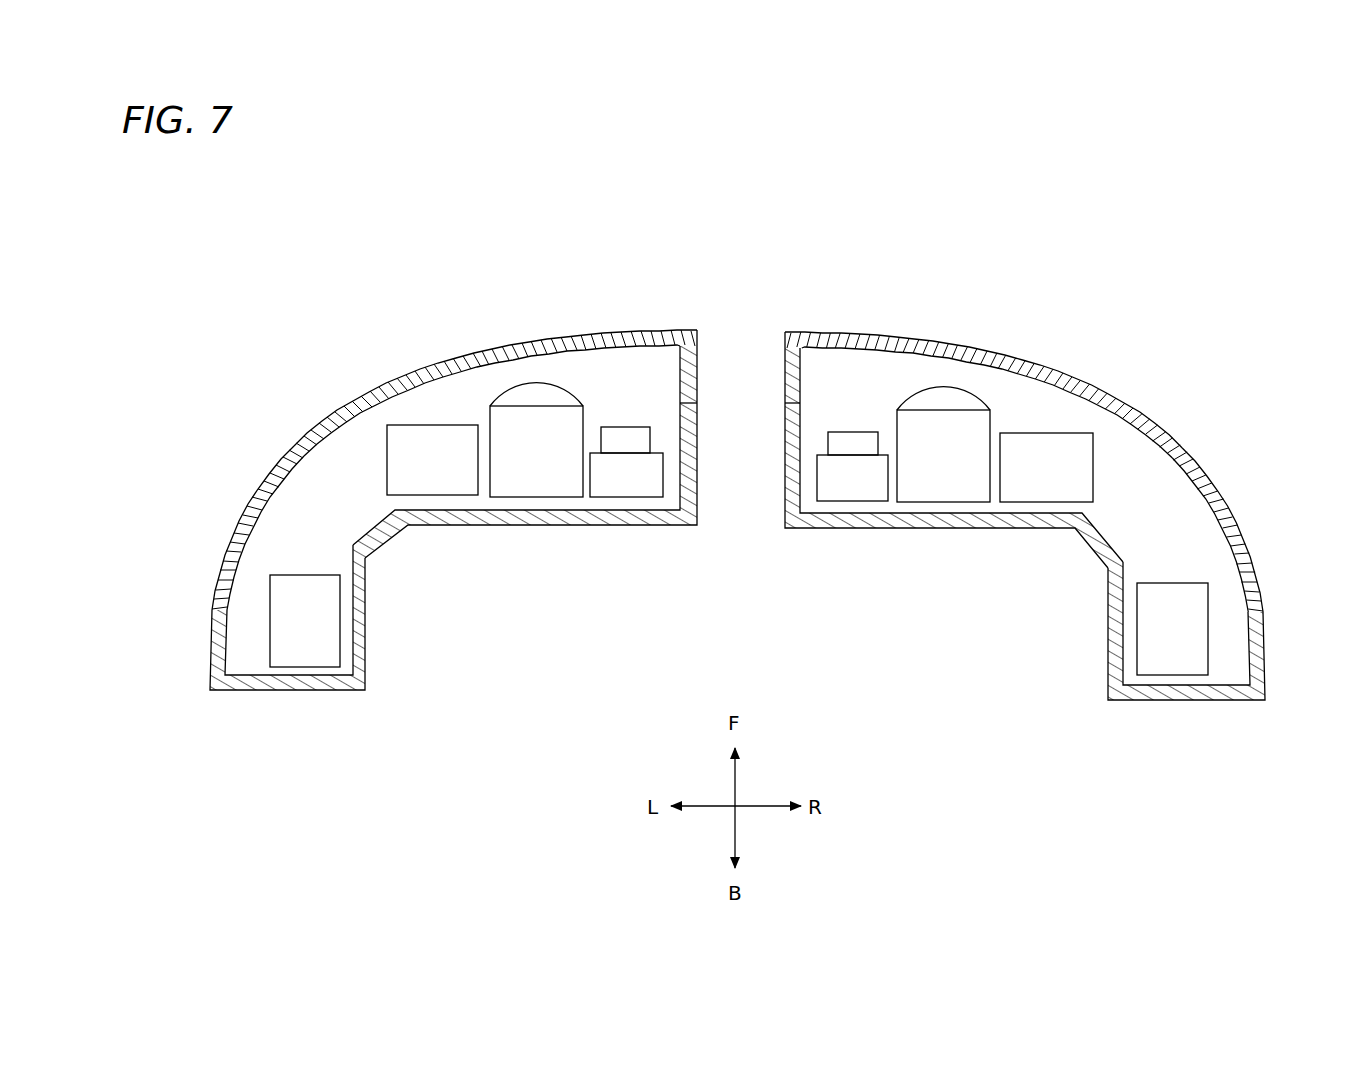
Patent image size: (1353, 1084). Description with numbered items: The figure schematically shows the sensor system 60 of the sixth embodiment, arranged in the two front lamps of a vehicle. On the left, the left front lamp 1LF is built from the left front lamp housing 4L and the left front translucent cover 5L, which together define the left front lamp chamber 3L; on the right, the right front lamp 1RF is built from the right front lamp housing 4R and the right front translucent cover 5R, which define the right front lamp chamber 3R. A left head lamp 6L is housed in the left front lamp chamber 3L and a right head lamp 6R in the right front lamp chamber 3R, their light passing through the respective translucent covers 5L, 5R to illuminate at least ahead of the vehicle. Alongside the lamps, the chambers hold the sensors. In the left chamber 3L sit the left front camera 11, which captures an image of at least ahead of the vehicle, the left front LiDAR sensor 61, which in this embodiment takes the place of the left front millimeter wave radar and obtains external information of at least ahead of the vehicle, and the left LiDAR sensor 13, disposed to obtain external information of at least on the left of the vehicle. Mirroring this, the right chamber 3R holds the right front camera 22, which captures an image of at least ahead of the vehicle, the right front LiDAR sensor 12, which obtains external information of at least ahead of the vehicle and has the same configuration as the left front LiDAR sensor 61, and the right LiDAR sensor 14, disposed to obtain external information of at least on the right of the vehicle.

The sensor system 60 is at (753, 240).
The left front lamp 1LF is at (437, 331).
The right front lamp 1RF is at (1144, 338).
The left front lamp chamber 3L is at (332, 441).
The right front lamp chamber 3R is at (1144, 451).
The left front translucent cover 5L is at (258, 488).
The right front translucent cover 5R is at (1229, 498).
The left front lamp housing 4L is at (315, 690).
The right front lamp housing 4R is at (1160, 700).
The left front LiDAR sensor 61 is at (432, 480).
The left head lamp 6L is at (537, 480).
The right head lamp 6R is at (945, 488).
The left front camera 11 is at (627, 488).
The right front camera 22 is at (851, 480).
The right front LiDAR sensor 12 is at (1048, 488).
The left LiDAR sensor 13 is at (330, 635).
The right LiDAR sensor 14 is at (1137, 648).